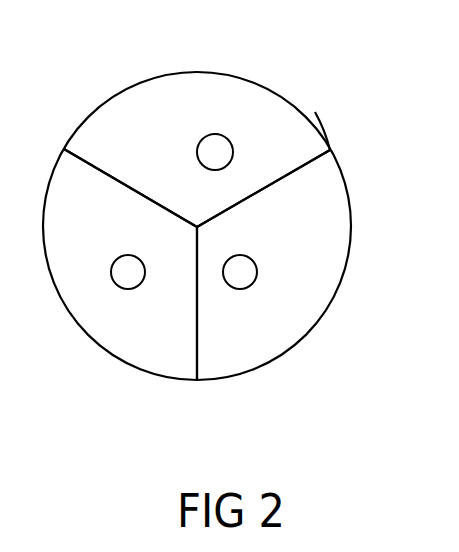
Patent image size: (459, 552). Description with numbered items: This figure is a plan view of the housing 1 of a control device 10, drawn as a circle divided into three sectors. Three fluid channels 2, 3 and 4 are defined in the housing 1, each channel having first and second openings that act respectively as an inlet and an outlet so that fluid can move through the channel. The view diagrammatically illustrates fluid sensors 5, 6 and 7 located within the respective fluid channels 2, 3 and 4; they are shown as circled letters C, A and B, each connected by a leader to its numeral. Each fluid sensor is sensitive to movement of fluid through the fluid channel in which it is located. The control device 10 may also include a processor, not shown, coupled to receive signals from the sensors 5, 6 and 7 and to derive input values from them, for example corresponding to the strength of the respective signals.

The control device 10 is at (316, 70).
The housing 1 is at (303, 111).
The fluid channel 2 is at (102, 225).
The fluid channel 3 is at (226, 113).
The fluid channel 4 is at (307, 320).
The fluid sensor 5 is at (145, 272).
The fluid sensor 6 is at (233, 152).
The fluid sensor 7 is at (257, 272).